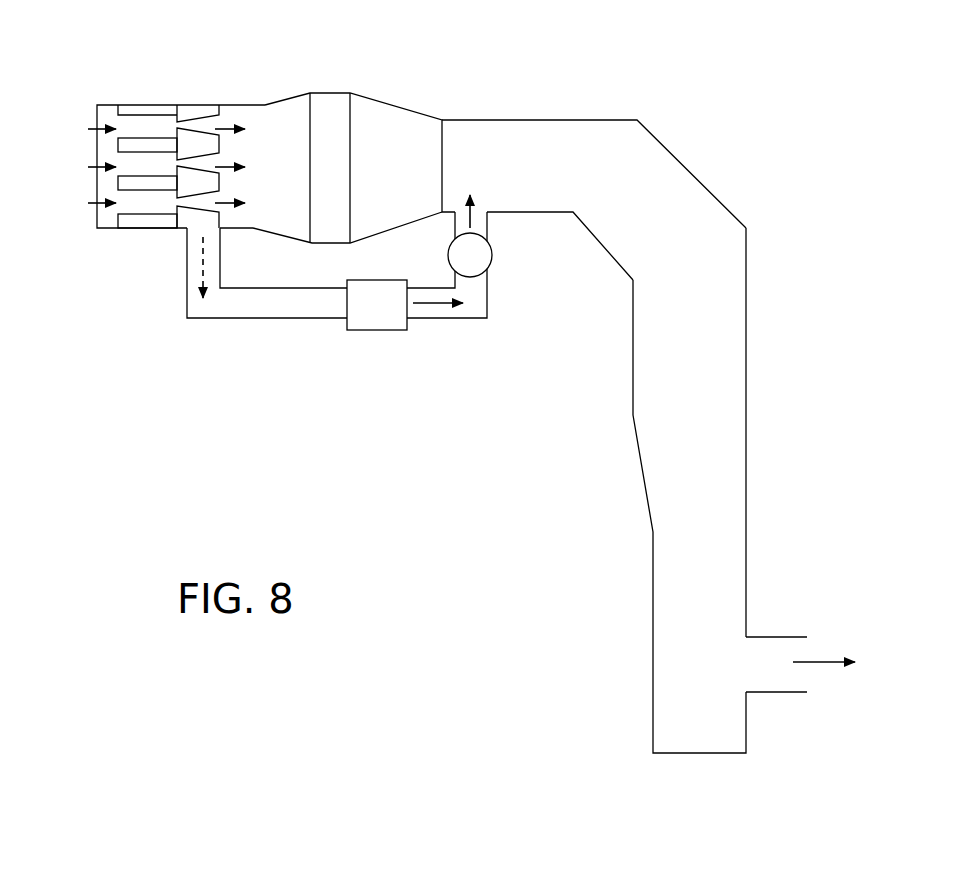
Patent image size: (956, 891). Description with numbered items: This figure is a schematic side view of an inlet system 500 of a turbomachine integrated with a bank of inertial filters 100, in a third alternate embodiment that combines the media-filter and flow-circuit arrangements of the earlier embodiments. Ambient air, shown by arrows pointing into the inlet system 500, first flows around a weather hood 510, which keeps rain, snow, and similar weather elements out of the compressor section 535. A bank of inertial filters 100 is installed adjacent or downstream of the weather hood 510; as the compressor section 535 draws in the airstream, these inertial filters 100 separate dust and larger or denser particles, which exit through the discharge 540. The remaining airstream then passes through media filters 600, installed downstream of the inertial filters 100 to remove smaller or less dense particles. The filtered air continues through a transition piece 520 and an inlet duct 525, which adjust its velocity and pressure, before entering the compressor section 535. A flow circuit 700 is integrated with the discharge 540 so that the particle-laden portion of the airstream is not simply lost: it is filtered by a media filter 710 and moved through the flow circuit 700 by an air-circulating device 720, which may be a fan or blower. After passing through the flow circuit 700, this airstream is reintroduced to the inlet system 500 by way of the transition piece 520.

The inertial filter 100 is at (213, 115).
The inlet system 500 is at (752, 75).
The weather hood 510 is at (107, 83).
The transition piece 520 is at (683, 167).
The inlet duct 525 is at (746, 468).
The compressor section 535 is at (783, 700).
The discharge 540 is at (187, 261).
The media filter 600 is at (313, 177).
The flow circuit 700 is at (388, 271).
The media filter 710 is at (395, 319).
The air-circulating device 720 is at (458, 268).